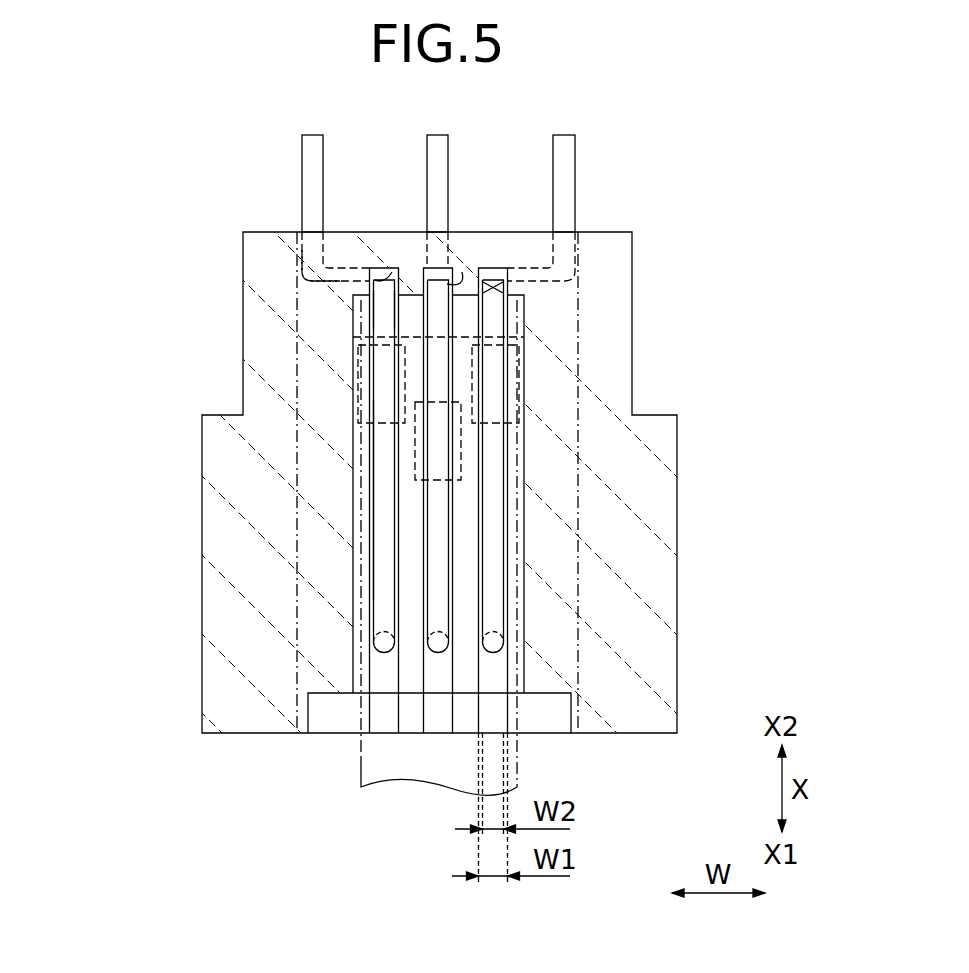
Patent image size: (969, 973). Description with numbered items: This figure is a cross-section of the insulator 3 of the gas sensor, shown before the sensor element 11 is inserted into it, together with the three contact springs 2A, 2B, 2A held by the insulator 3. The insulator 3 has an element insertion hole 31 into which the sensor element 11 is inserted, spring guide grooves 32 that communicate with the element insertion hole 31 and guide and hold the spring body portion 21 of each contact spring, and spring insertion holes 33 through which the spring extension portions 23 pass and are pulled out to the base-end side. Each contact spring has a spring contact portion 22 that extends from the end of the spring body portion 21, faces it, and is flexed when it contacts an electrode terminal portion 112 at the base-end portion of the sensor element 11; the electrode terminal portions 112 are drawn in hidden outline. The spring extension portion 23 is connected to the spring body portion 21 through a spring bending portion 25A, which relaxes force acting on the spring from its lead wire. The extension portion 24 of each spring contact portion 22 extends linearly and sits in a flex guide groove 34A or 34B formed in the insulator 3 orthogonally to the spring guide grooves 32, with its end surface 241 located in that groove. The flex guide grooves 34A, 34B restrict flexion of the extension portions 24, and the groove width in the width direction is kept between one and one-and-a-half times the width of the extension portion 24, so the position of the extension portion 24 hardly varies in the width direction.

The insulator 3 is at (678, 652).
The sensor element 11 is at (397, 762).
The electrode terminal portion 112 is at (512, 383).
The spring body portion 21 is at (267, 320).
The spring contact portion 22 is at (385, 530).
The spring extension portion 23 is at (313, 177).
The extension portion 24 is at (387, 316).
The end surface 241 is at (392, 272).
The spring bending portion 25A is at (300, 272).
The contact spring 2A is at (372, 592).
The contact spring 2B is at (423, 615).
The element insertion hole 31 is at (500, 594).
The spring guide groove 32 is at (498, 492).
The spring insertion hole 33 is at (575, 230).
The flex guide groove 34A is at (517, 290).
The flex guide groove 34B is at (462, 272).